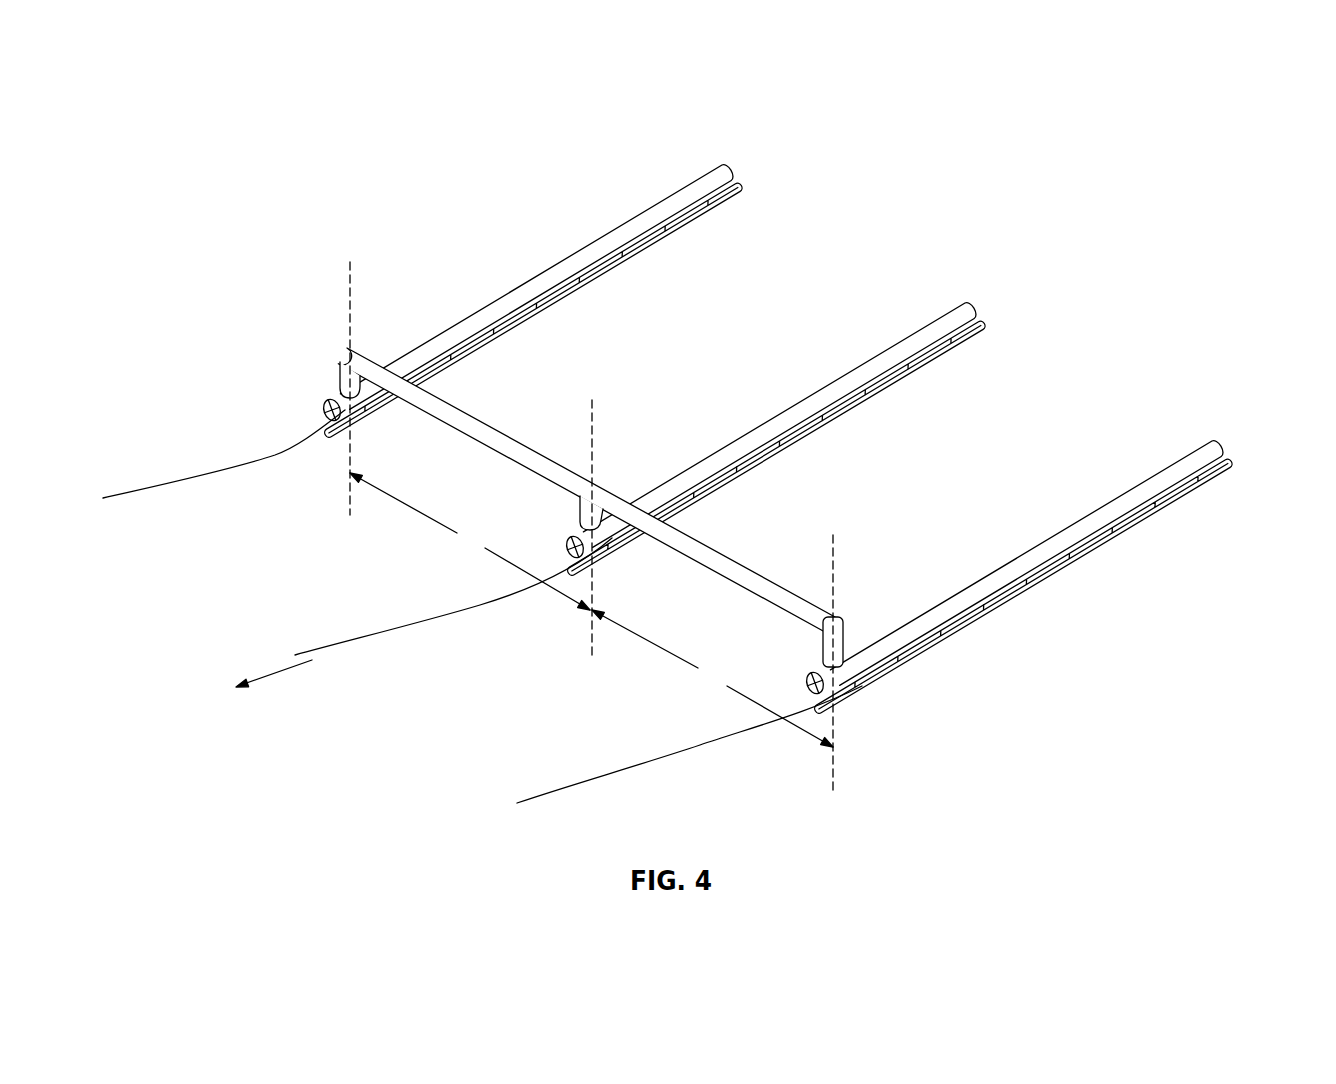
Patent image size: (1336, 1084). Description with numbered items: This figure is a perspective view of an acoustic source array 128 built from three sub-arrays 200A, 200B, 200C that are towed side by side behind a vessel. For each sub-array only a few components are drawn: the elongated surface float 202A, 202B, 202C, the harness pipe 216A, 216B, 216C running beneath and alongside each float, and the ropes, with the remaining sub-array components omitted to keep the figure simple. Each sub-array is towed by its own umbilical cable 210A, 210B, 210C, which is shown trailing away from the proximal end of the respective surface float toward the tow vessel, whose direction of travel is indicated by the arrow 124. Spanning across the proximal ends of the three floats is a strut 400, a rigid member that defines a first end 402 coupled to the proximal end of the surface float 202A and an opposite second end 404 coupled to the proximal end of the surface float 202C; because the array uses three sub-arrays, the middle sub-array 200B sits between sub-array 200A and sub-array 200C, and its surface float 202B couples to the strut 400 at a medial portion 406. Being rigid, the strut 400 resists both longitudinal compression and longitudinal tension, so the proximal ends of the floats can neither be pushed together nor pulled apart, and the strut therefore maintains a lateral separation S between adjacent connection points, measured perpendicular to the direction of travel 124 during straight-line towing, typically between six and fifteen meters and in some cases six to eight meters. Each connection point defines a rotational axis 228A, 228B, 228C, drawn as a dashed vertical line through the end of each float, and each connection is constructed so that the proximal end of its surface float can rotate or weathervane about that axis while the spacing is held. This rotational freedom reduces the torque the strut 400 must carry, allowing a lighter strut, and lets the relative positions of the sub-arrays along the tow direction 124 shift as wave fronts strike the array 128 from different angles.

The acoustic source array 128 is at (243, 132).
The sub-array 200A is at (576, 283).
The surface float 202A is at (702, 178).
The harness pipe 216A is at (734, 200).
The sub-array 200B is at (819, 420).
The surface float 202B is at (942, 315).
The harness pipe 216B is at (975, 338).
The sub-array 200C is at (1065, 558).
The surface float 202C is at (1182, 453).
The harness pipe 216C is at (1220, 478).
The rotational axis 228A is at (348, 277).
The rotational axis 228B is at (591, 418).
The rotational axis 228C is at (832, 528).
The strut 400 is at (602, 481).
The first end 402 is at (344, 352).
The second end 404 is at (822, 628).
The medial portion 406 is at (609, 477).
The umbilical cable 210A is at (182, 482).
The umbilical cable 210B is at (428, 618).
The umbilical cable 210C is at (666, 756).
The direction of travel 124 is at (290, 668).